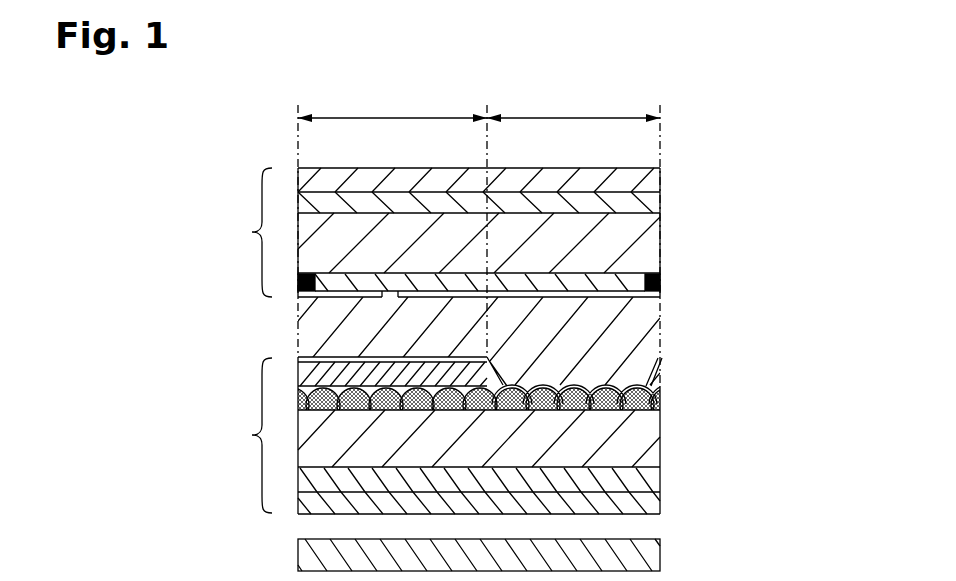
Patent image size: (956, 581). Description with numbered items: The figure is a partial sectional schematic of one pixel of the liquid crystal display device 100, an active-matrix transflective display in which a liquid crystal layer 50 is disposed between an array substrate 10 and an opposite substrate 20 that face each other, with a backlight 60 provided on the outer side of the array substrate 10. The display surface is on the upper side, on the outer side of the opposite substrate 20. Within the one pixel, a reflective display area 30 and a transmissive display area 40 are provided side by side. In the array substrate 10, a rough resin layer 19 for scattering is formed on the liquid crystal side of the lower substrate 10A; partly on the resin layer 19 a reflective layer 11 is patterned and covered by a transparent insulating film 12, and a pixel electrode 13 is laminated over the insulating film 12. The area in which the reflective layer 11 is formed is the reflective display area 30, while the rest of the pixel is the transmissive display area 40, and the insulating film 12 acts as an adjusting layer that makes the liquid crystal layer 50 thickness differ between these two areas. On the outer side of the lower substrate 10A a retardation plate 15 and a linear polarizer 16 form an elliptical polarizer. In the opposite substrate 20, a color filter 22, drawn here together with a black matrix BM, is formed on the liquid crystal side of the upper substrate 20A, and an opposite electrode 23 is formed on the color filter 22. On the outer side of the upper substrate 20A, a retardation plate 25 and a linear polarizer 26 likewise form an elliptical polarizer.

The liquid crystal display device 100 is at (686, 132).
The reflective display area 30 is at (392, 104).
The transmissive display area 40 is at (573, 103).
The opposite substrate 20 is at (245, 232).
The array substrate 10 is at (245, 435).
The linear polarizer 26 is at (662, 178).
The retardation plate 25 is at (662, 200).
The upper substrate 20A is at (650, 234).
The color filter 22 is at (623, 258).
The black matrix BM is at (660, 277).
The opposite electrode 23 is at (655, 294).
The liquid crystal layer 50 is at (622, 332).
The pixel electrode 13 is at (662, 353).
The transparent insulating film 12 is at (662, 385).
The rough resin layer 19 is at (580, 412).
The reflective layer 11 is at (300, 382).
The lower substrate 10A is at (650, 448).
The retardation plate 15 is at (662, 475).
The linear polarizer 16 is at (662, 502).
The backlight 60 is at (662, 553).